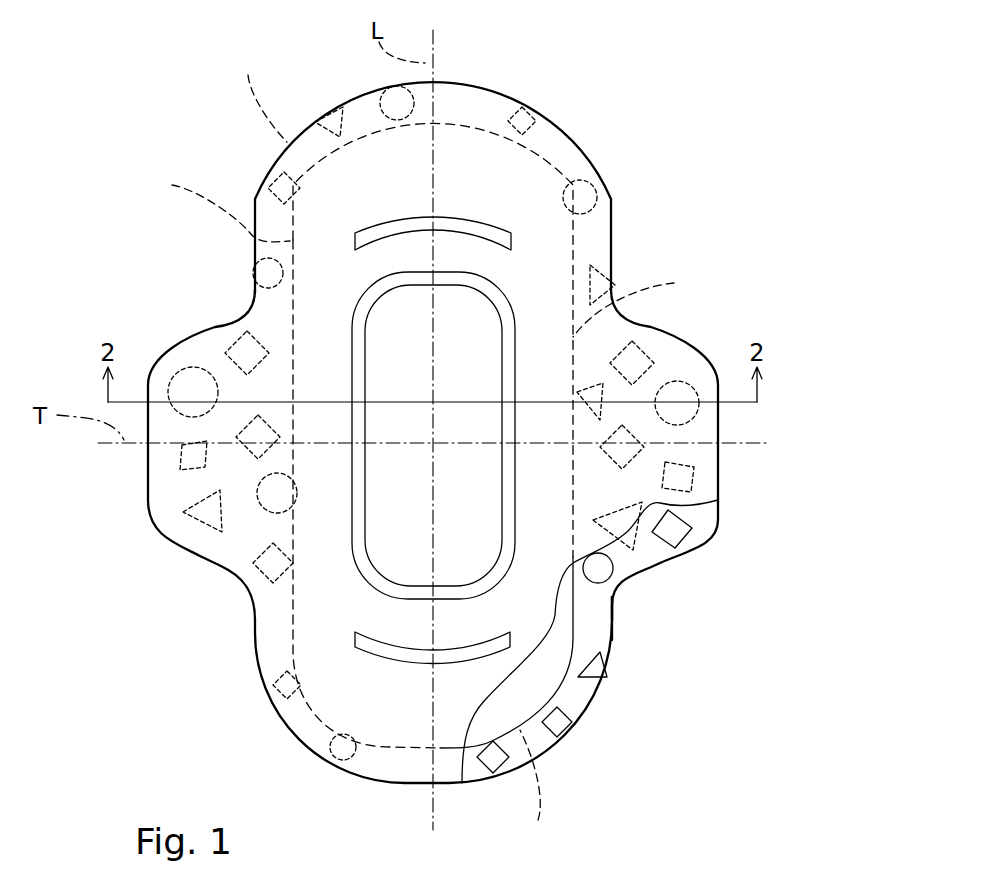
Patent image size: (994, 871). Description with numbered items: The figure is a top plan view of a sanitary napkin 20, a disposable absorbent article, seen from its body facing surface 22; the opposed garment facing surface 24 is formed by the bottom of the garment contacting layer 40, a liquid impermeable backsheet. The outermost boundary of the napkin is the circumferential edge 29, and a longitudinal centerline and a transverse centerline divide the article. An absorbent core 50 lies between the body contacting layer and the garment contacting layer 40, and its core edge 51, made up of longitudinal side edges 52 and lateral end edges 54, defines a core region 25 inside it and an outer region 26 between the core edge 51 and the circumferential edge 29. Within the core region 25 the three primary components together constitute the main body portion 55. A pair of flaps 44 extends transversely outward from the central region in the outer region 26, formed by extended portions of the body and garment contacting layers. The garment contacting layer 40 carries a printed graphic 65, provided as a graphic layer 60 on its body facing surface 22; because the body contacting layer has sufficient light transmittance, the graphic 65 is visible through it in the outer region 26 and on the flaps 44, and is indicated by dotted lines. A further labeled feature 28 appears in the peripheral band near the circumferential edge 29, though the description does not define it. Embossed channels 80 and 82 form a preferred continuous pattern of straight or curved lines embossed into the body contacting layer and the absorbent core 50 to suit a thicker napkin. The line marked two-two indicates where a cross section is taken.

The sanitary napkin 20 is at (623, 66).
The body facing surface 22 is at (525, 192).
The garment facing surface 24 is at (521, 297).
The core region 25 is at (318, 601).
The outer region 26 is at (447, 95).
The peripheral compressed region 28 is at (483, 105).
The circumferential edge 29 is at (570, 127).
The garment contacting layer 40 is at (615, 641).
The flaps 44 is at (693, 360).
The absorbent core 50 is at (545, 675).
The core edge 51 is at (593, 601).
The longitudinal side edges 52 is at (422, 254).
The lateral end edges 54 is at (391, 450).
The main body portion 55 is at (321, 297).
The graphic layer 60 is at (600, 636).
The graphic 65 is at (705, 540).
The embossed channel 80 is at (352, 368).
The embossed channels 82 is at (380, 230).